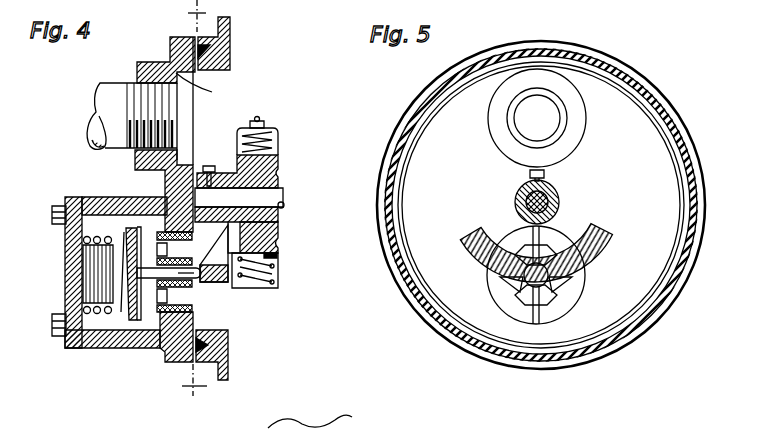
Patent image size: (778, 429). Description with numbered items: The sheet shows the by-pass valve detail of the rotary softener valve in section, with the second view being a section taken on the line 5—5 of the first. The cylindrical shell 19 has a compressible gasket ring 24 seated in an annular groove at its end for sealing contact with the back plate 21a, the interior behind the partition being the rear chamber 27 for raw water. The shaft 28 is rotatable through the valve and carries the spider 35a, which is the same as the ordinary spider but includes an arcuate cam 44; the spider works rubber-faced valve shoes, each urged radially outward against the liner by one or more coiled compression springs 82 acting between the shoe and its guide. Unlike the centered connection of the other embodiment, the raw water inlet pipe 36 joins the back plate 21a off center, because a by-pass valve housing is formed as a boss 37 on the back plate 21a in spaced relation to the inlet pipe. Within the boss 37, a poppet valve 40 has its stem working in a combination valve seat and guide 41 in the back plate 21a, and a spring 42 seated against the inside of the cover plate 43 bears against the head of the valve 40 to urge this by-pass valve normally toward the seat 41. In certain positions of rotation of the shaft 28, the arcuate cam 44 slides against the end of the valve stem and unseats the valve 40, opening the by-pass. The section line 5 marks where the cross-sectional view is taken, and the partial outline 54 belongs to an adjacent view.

In FIG. 4, the section line 5- 5 is at (198, 203).
In FIG. 4, the shell 19 is at (228, 362).
In FIG. 4, the back plate 21a is at (172, 362).
In FIG. 5, the back plate 21a is at (530, 366).
In FIG. 4, the compressible gasket ring 24 is at (212, 58).
In FIG. 5, the compressible gasket ring 24 is at (605, 335).
In FIG. 4, the rear chamber 27 is at (166, 63).
In FIG. 5, the rear chamber 27 is at (637, 256).
In FIG. 4, the shaft 28 is at (278, 197).
In FIG. 5, the shaft 28 is at (515, 198).
In FIG. 4, the spider 35a is at (272, 175).
In FIG. 5, the spider 35a is at (560, 192).
In FIG. 4, the raw water inlet pipe 36 is at (112, 140).
In FIG. 5, the raw water inlet pipe 36 is at (567, 125).
In FIG. 4, the boss 37 is at (108, 349).
In FIG. 4, the poppet valve 40 is at (130, 230).
In FIG. 4, the combination valve seat and guide 41 is at (152, 310).
In FIG. 5, the combination valve seat and guide 41 is at (567, 288).
In FIG. 4, the spring 42 is at (92, 313).
In FIG. 4, the cover plate 43 is at (68, 258).
In FIG. 4, the arcuate cam 44 is at (213, 285).
In FIG. 5, the arcuate cam 44 is at (607, 235).
In FIG. 5, the member 54 is at (320, 418).
In FIG. 4, the coiled compression spring 82 is at (268, 125).